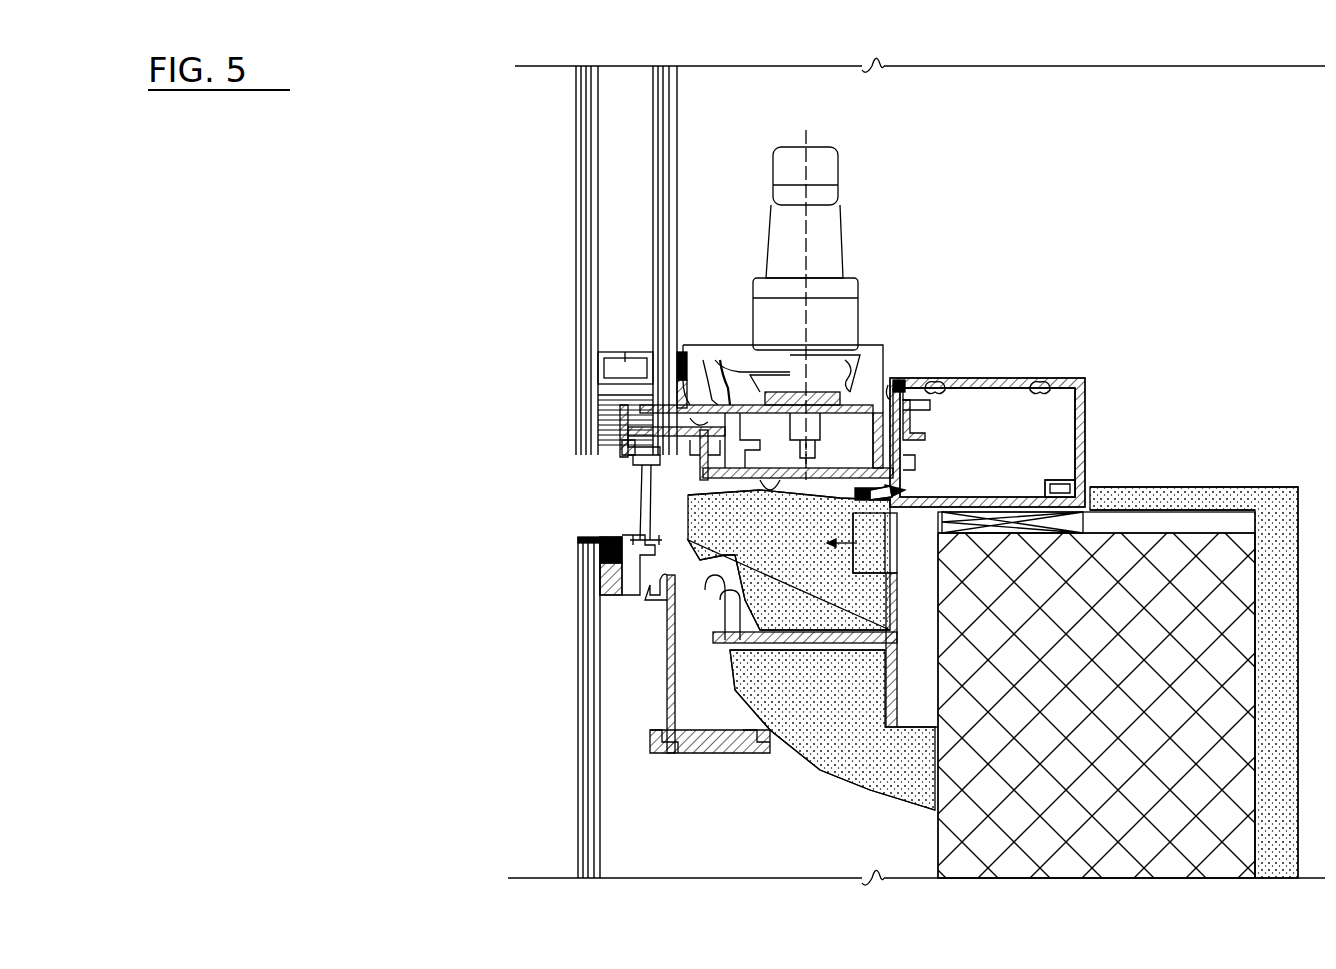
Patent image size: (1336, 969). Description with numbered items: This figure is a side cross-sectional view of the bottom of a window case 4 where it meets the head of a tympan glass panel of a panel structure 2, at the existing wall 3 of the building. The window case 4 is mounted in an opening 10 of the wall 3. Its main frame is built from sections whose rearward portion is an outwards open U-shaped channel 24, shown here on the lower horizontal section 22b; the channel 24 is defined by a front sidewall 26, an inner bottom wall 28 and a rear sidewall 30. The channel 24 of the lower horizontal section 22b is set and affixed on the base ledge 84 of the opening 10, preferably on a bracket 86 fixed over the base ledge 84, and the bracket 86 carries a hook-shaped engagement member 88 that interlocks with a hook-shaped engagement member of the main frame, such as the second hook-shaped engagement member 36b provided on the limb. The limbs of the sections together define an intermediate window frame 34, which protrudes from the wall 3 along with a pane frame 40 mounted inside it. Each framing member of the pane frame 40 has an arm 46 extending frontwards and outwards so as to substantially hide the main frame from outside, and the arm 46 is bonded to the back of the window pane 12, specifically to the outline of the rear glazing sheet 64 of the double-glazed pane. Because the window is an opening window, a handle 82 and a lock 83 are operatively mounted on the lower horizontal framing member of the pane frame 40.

The panel structure 2 is at (536, 718).
The wall 3 is at (1118, 860).
The window case 4 is at (553, 223).
The opening 10 is at (1090, 199).
The window pane 12 is at (641, 277).
The horizontal section 22b is at (1010, 373).
The U-shaped channel 24 is at (1057, 451).
The front sidewall 26 is at (916, 457).
The inner bottom wall 28 is at (1034, 380).
The rear sidewall 30 is at (1080, 420).
The intermediate window frame 34 is at (785, 494).
The second hook-shaped engagement member 36b is at (906, 496).
The pane frame 40 is at (813, 373).
The arm 46 is at (732, 360).
The rear glazing sheet 64 is at (708, 598).
The handle 82 is at (838, 222).
The lock 83 is at (812, 423).
The base ledge 84 is at (1096, 489).
The bracket 86 is at (912, 495).
The hook-shaped engagement member 88 is at (908, 488).